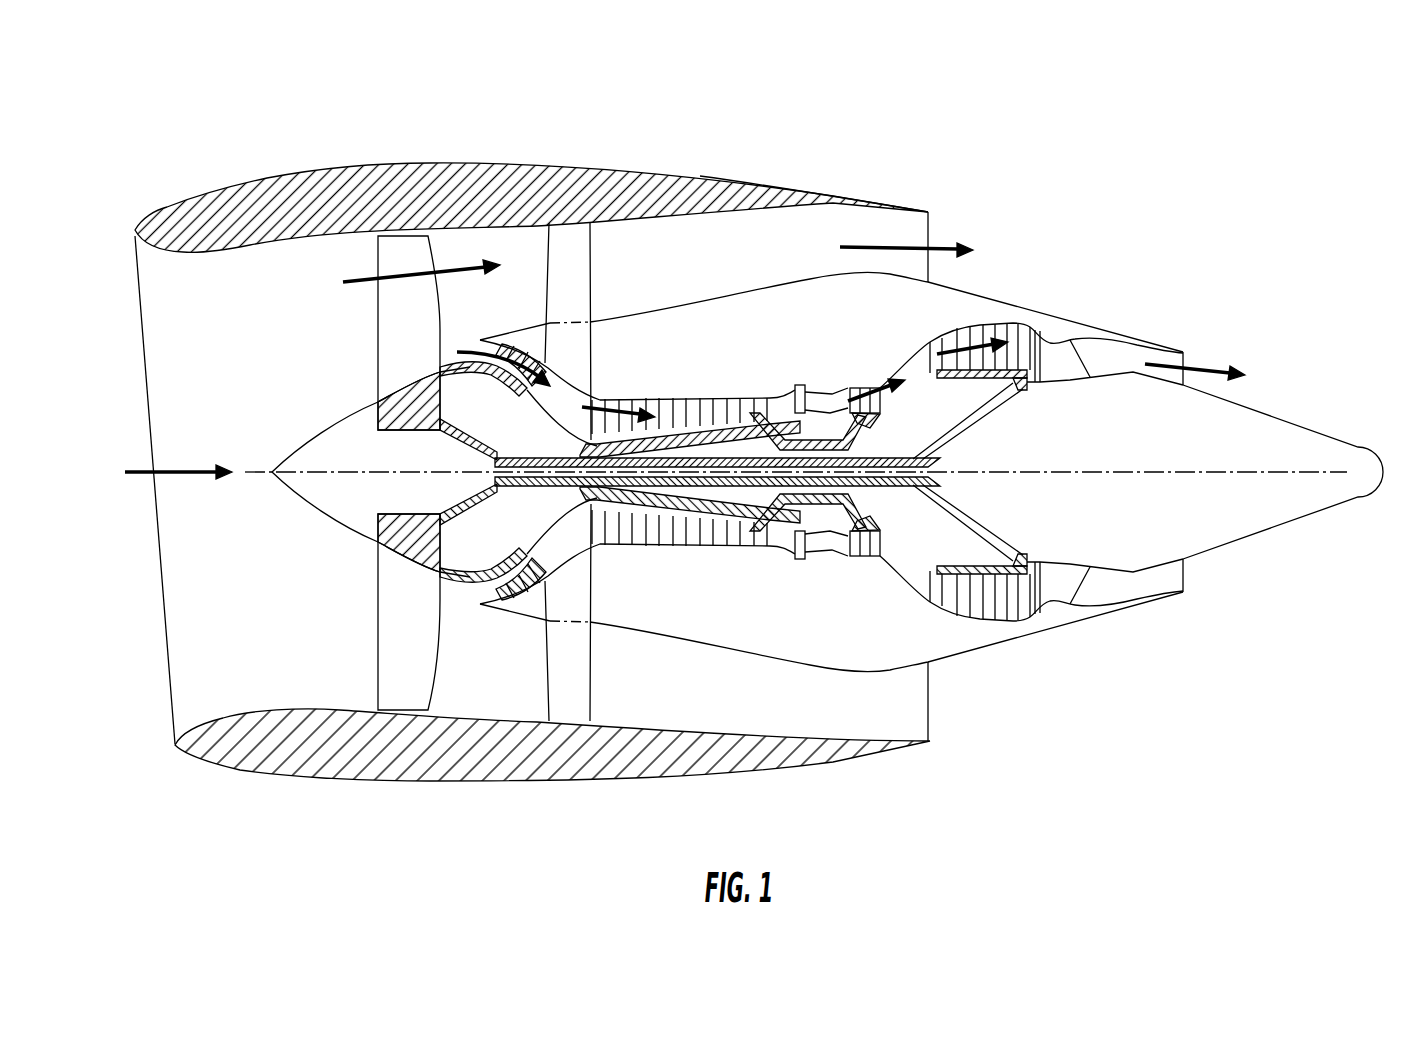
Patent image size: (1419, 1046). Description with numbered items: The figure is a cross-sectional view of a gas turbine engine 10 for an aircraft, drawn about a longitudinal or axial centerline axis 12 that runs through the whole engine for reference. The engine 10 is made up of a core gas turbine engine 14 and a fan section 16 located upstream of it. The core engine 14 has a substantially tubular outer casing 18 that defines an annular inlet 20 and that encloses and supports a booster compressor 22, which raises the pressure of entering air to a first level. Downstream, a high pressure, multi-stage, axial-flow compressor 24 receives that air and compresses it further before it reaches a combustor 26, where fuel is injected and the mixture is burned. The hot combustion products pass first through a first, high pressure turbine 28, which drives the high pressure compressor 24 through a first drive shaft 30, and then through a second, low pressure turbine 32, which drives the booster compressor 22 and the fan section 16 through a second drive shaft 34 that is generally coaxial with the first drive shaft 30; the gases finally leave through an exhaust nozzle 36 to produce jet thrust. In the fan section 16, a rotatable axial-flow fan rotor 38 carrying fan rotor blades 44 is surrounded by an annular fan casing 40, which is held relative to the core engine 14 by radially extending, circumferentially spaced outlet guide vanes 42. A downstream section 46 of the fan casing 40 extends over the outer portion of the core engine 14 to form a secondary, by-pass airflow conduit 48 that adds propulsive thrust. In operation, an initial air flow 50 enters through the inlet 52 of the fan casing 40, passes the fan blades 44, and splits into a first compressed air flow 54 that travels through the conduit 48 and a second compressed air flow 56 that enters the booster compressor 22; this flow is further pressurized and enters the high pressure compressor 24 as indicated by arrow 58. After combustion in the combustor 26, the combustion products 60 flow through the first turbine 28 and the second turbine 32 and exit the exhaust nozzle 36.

The gas turbine engine 10 is at (1090, 198).
The longitudinal or axial centerline axis 12 is at (1130, 470).
The core gas turbine engine 14 is at (770, 360).
The fan section 16 is at (427, 150).
The outer casing 18 is at (772, 658).
The annular inlet 20 is at (490, 593).
The booster compressor 22 is at (545, 560).
The high pressure compressor 24 is at (626, 540).
The combustor 26 is at (820, 545).
The first turbine 28 is at (875, 548).
The first drive shaft 30 is at (866, 424).
The second turbine 32 is at (1025, 617).
The second drive shaft 34 is at (557, 457).
The exhaust nozzle 36 is at (1188, 358).
The fan rotor 38 is at (438, 436).
The fan casing 40 is at (425, 780).
The outlet guide vanes 42 is at (592, 272).
The fan rotor blades 44 is at (378, 647).
The downstream section 46 is at (826, 200).
The by-pass airflow conduit 48 is at (739, 264).
The initial air flow 50 is at (167, 466).
The inlet 52 is at (172, 720).
The first compressed air flow 54 is at (390, 278).
The second compressed air flow 56 is at (470, 338).
The air flow entering high pressure compressor 58 is at (612, 394).
The combustion products 60 is at (863, 385).